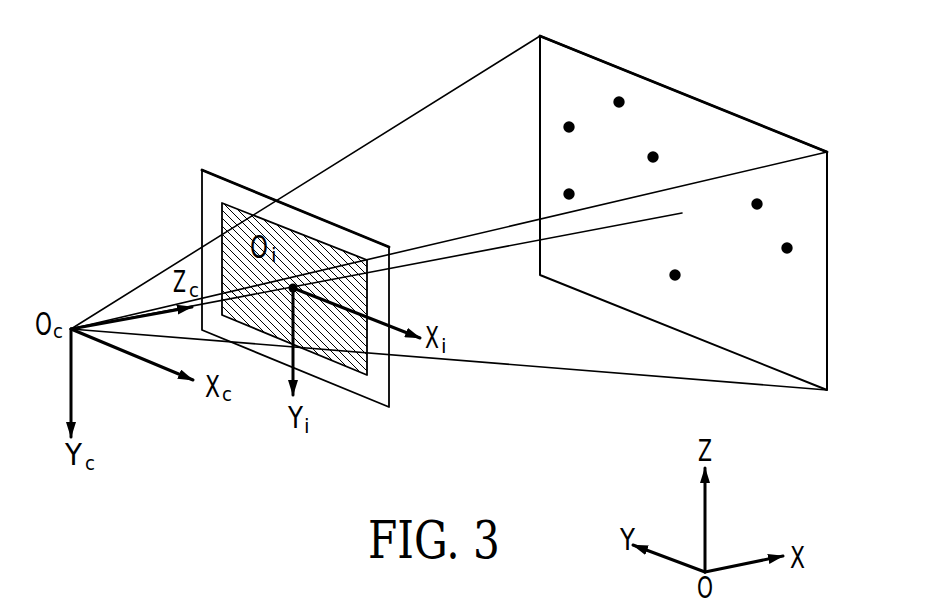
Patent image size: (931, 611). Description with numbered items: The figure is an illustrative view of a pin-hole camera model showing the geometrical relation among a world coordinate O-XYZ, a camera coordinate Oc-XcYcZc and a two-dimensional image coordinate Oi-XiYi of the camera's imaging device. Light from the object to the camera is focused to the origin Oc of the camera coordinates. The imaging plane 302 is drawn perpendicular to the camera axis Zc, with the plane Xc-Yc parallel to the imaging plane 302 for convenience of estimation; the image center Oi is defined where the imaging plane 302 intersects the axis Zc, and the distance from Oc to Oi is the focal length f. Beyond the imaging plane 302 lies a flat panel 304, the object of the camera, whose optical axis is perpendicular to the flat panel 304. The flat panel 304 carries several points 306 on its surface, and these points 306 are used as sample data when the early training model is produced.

The imaging plane 302 is at (255, 191).
The flat panel 304 is at (798, 140).
The points 306 is at (624, 100).